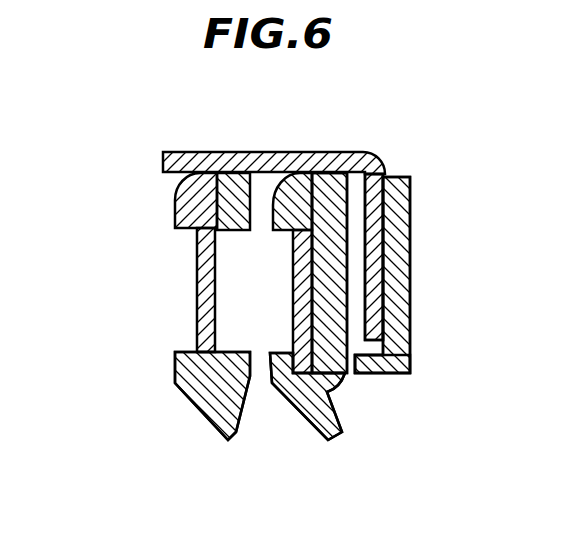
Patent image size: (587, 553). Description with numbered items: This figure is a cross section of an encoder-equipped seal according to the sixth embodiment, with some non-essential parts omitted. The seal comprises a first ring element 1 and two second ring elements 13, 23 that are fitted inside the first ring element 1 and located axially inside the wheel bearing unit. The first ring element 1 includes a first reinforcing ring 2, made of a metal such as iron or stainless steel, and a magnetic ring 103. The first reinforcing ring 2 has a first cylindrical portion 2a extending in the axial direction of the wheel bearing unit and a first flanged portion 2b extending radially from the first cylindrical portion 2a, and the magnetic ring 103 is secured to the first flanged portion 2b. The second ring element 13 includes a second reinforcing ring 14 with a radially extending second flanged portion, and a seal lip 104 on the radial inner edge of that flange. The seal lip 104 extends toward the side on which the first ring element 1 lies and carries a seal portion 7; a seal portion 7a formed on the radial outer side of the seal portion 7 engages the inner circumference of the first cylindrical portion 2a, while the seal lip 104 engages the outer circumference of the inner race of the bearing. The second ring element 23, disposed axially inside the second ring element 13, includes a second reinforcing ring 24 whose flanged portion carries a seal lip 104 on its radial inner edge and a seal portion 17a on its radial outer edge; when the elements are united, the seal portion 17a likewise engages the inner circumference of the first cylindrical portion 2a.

The first ring element 1 is at (392, 396).
The first reinforcing ring 2 is at (399, 57).
The first cylindrical portion 2a is at (337, 151).
The first flanged portion 2b is at (413, 178).
The seal portion 7 is at (410, 317).
The seal portion 7a is at (256, 151).
The second ring element 13 is at (300, 438).
The second reinforcing ring 14 is at (292, 305).
The seal portion 17a is at (232, 192).
The second ring element 23 is at (170, 417).
The second reinforcing ring 24 is at (196, 285).
The magnetic ring 103 is at (410, 345).
The seal lip 104 is at (207, 418).